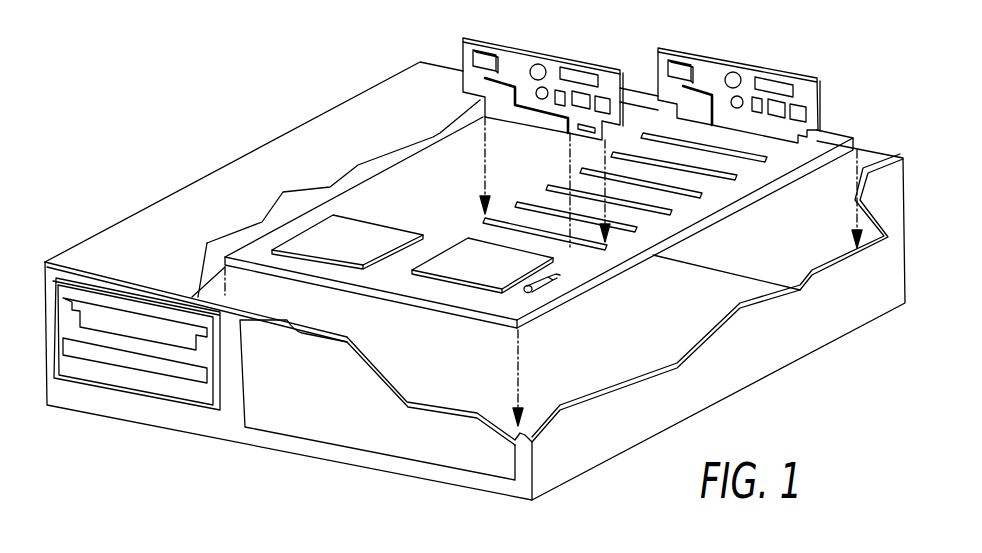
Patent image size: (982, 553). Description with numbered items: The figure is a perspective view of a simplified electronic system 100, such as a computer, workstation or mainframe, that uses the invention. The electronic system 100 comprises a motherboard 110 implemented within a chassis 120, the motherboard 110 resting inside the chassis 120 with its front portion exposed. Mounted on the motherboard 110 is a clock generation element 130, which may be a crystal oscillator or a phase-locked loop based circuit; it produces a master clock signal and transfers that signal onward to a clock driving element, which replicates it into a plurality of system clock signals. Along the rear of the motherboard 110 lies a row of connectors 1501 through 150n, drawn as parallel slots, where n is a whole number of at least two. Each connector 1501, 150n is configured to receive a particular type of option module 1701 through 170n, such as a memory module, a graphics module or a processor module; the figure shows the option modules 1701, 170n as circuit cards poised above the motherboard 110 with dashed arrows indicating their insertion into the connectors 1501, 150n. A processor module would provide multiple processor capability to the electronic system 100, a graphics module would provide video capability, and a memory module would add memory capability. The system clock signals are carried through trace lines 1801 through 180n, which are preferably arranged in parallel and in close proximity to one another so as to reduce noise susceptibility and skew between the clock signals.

The electronic system 100 is at (206, 113).
The motherboard 110 is at (642, 95).
The chassis 120 is at (772, 345).
The clock generation element 130 is at (537, 291).
The connector 150n is at (585, 232).
The connector 1501 is at (773, 143).
The option module 170n is at (462, 55).
The option module 1701 is at (727, 58).
The trace line 180n is at (548, 250).
The trace line 1801 is at (488, 245).